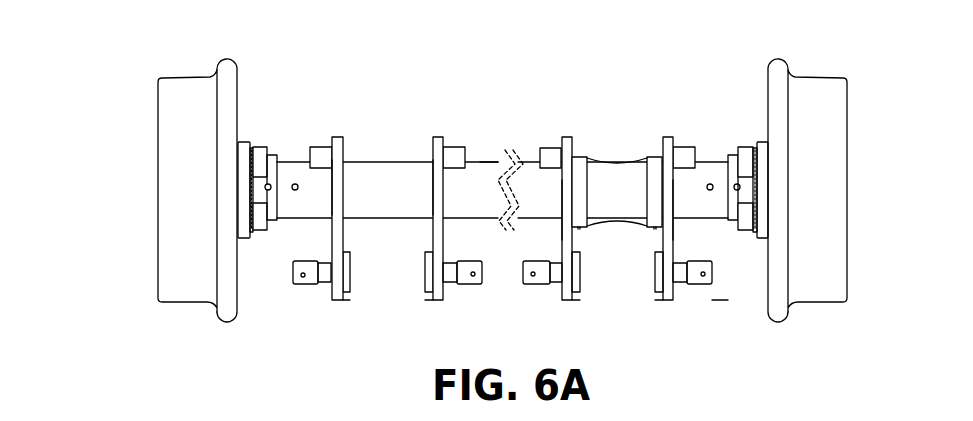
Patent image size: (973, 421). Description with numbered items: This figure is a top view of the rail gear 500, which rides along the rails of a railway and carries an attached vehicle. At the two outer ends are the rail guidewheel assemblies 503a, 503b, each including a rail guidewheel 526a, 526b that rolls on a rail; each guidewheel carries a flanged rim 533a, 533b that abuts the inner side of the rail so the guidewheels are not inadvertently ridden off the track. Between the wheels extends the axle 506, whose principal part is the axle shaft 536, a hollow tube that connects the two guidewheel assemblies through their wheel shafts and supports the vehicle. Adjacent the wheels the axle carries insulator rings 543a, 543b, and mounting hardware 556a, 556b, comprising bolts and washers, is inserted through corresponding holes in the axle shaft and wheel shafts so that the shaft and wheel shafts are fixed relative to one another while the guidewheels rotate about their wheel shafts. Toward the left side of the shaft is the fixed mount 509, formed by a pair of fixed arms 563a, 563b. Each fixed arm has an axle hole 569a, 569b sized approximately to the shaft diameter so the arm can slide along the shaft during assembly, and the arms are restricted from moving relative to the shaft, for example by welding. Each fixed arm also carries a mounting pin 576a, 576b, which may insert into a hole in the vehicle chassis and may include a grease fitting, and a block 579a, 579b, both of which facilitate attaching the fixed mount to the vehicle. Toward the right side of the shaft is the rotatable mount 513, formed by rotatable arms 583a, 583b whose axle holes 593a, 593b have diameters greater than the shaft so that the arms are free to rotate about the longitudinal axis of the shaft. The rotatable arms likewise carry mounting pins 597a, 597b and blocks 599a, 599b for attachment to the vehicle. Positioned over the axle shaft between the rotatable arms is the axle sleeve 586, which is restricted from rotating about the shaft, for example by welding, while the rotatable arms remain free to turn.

The rail gear 500 is at (743, 346).
The rail guidewheel assembly 503a is at (155, 176).
The rail guidewheel assembly 503b is at (848, 176).
The axle 506 is at (487, 162).
The fixed mount 509 is at (403, 336).
The rotatable mount 513 is at (641, 336).
The rail guidewheel 526a is at (187, 191).
The rail guidewheel 526b is at (817, 191).
The flanged rim 533a is at (223, 72).
The flanged rim 533b is at (783, 72).
The axle shaft 536 is at (502, 190).
The insulator ring 543a is at (252, 152).
The insulator ring 543b is at (757, 152).
The mounting hardware 556a is at (295, 184).
The mounting hardware 556b is at (737, 184).
The fixed arm 563a is at (338, 146).
The fixed arm 563b is at (440, 152).
The axle hole 569a is at (332, 207).
The axle hole 569b is at (433, 190).
The mounting pin 576a is at (310, 277).
The mounting pin 576b is at (465, 276).
The block 579a is at (327, 153).
The block 579b is at (449, 152).
The rotatable arm 583a is at (570, 146).
The rotatable arm 583b is at (668, 146).
The axle sleeve 586 is at (617, 193).
The axle hole 593a is at (562, 203).
The axle hole 593b is at (675, 203).
The mounting pin 597a is at (543, 276).
The mounting pin 597b is at (693, 276).
The block 599a is at (552, 151).
The block 599b is at (685, 151).